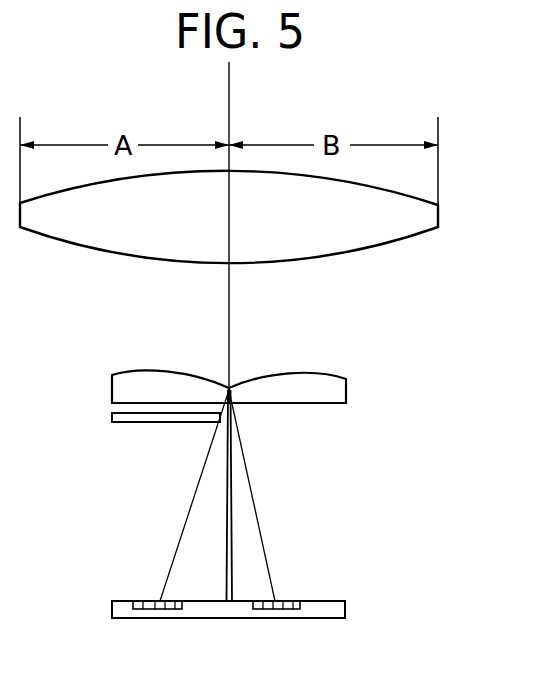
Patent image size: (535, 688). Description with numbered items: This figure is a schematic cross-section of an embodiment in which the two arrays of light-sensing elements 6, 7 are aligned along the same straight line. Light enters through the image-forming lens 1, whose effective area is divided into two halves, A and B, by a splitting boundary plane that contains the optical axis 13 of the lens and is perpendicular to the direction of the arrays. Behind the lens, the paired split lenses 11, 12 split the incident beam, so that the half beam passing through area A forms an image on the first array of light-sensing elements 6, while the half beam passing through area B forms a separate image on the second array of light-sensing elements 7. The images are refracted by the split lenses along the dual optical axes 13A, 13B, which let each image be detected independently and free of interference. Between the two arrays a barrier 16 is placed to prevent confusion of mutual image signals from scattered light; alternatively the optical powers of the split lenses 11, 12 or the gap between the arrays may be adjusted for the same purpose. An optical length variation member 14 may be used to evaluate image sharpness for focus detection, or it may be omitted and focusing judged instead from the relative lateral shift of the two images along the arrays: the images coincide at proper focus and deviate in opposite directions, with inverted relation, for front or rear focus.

The image-forming lens 1 is at (333, 256).
The first array of light-sensing elements 6 is at (160, 618).
The second array of light-sensing elements 7 is at (265, 618).
The split lens 11 is at (167, 370).
The split lens 12 is at (310, 375).
The optical axis 13 is at (231, 93).
The refracted optical axis 13A is at (182, 533).
The refracted optical axis 13B is at (259, 527).
The optical length variation member 14 is at (148, 423).
The barrier 16 is at (232, 478).